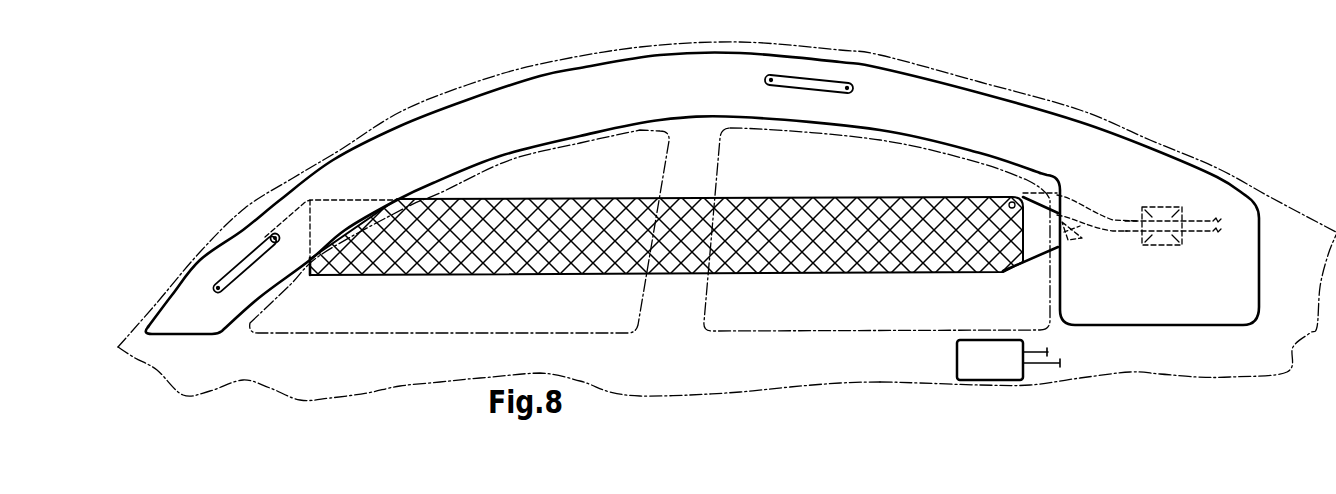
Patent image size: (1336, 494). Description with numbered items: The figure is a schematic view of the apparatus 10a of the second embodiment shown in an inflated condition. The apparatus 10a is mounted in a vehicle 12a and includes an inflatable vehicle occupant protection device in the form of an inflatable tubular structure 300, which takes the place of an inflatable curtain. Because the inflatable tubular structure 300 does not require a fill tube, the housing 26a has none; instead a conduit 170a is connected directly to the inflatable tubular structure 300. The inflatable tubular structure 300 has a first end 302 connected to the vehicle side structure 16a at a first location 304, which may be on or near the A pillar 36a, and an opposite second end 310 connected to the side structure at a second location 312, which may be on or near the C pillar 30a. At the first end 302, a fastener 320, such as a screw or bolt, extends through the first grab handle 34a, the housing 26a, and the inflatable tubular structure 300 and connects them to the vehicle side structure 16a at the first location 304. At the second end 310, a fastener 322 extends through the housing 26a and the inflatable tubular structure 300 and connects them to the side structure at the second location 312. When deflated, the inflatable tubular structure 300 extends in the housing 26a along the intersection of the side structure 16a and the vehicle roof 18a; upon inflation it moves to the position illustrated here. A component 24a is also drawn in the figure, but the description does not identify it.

The apparatus 10a is at (364, 63).
The vehicle 12a is at (328, 112).
The vehicle side structure 16a is at (385, 358).
The vehicle roof 18a is at (735, 43).
The drive motor 24a is at (1190, 210).
The housing 26a is at (503, 107).
The C pillar 30a is at (1162, 353).
The first grab handle 34a is at (238, 270).
The A pillar 36a is at (322, 157).
The conduit 170a is at (1106, 212).
The inflatable tubular structure 300 is at (563, 217).
The first end 302 is at (303, 232).
The first location 304 is at (278, 243).
The second end 310 is at (1035, 227).
The second location 312 is at (1079, 234).
The fastener 320 is at (274, 243).
The fastener 322 is at (1077, 238).